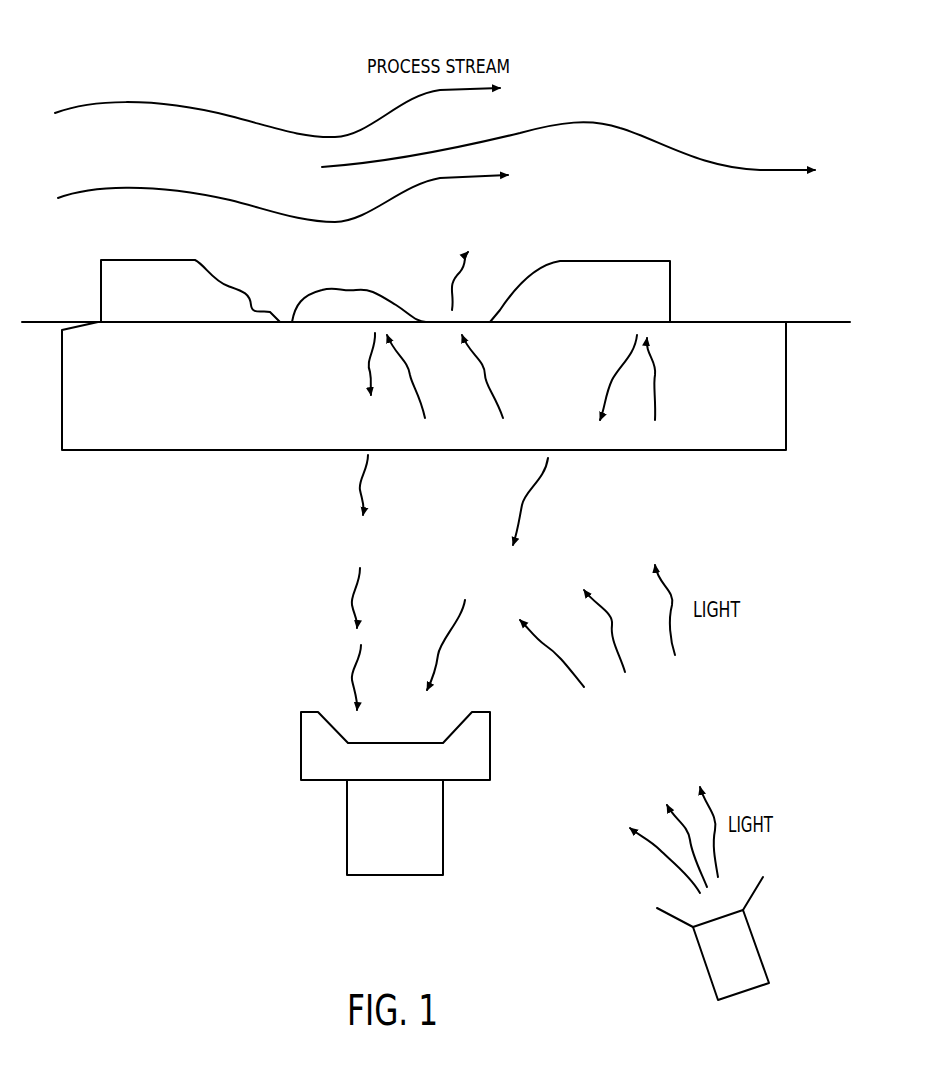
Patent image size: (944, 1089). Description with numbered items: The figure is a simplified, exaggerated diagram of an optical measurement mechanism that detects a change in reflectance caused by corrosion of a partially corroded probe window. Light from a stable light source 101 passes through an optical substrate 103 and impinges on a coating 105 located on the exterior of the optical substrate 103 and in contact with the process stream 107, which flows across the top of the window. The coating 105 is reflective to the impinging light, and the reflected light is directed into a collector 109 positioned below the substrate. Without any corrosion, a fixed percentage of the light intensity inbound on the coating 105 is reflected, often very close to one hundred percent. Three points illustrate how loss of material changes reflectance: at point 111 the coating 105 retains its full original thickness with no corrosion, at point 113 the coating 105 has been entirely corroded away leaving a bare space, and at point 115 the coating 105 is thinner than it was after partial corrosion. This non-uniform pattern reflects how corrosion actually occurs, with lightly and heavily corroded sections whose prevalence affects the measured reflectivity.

The light source 101 is at (760, 953).
The optical substrate 103 is at (786, 415).
The coating 105 is at (169, 260).
The process stream 107 is at (669, 216).
The collector 109 is at (443, 820).
The point of full coating thickness 111 is at (617, 322).
The point of fully corroded coating 113 is at (480, 322).
The point of thinned coating 115 is at (323, 323).